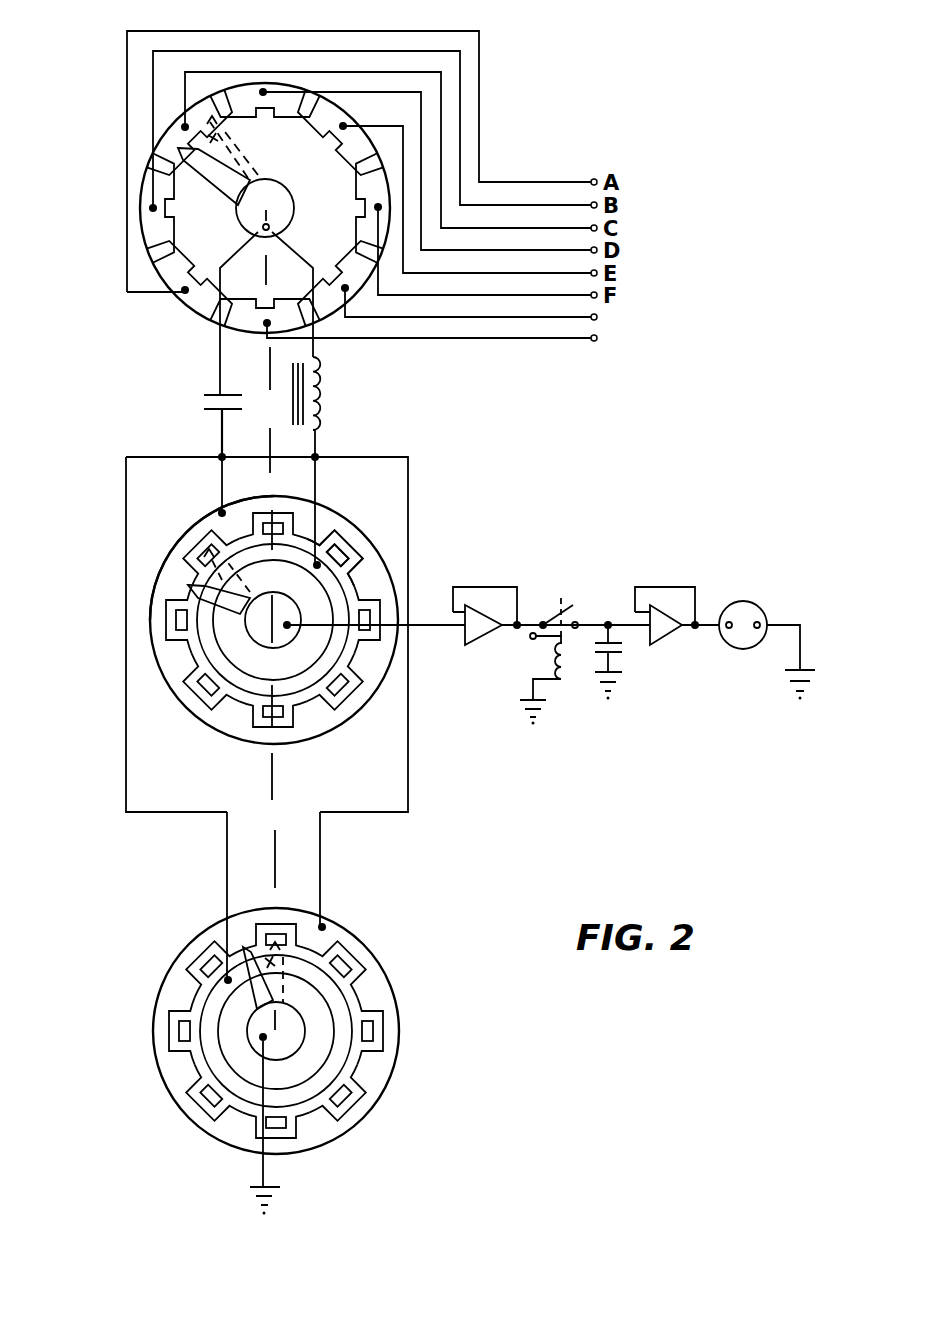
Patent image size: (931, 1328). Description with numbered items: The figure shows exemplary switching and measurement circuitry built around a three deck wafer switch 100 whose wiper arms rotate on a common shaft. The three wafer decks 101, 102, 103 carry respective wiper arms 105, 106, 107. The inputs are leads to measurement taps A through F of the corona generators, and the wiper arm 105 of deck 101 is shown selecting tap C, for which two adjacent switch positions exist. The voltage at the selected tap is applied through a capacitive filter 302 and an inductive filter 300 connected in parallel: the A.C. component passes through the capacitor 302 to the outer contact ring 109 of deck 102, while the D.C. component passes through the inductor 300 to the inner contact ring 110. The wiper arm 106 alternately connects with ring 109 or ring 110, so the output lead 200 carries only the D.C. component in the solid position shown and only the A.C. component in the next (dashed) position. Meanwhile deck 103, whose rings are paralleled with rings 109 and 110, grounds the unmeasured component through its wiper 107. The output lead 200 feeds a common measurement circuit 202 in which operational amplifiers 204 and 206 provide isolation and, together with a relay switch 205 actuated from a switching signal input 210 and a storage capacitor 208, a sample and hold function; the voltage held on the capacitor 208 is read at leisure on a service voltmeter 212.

The three deck wafer switch 100 is at (117, 452).
The wafer deck 101 is at (155, 252).
The wafer deck 102 is at (207, 694).
The wafer deck 103 is at (173, 1030).
The wiper arm 105 is at (290, 197).
The wiper arm 106 is at (257, 631).
The wiper arm 107 is at (313, 1040).
The outer contact ring 109 is at (163, 605).
The inner contact ring 110 is at (323, 573).
The output lead 200 is at (437, 626).
The measurement circuit 202 is at (639, 538).
The operational amplifier 204 is at (495, 610).
The switch 205 is at (565, 598).
The operational amplifier 206 is at (677, 605).
The storage capacitor 208 is at (620, 652).
The switching signal input 210 is at (530, 641).
The voltmeter 212 is at (762, 607).
The inductive filter 300 is at (326, 379).
The capacitive filter 302 is at (212, 395).